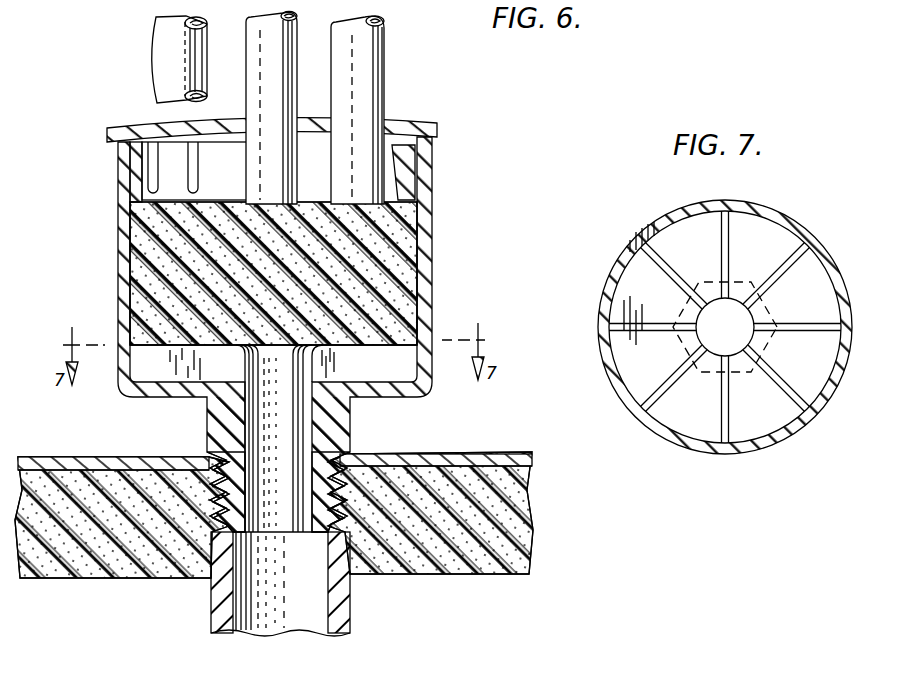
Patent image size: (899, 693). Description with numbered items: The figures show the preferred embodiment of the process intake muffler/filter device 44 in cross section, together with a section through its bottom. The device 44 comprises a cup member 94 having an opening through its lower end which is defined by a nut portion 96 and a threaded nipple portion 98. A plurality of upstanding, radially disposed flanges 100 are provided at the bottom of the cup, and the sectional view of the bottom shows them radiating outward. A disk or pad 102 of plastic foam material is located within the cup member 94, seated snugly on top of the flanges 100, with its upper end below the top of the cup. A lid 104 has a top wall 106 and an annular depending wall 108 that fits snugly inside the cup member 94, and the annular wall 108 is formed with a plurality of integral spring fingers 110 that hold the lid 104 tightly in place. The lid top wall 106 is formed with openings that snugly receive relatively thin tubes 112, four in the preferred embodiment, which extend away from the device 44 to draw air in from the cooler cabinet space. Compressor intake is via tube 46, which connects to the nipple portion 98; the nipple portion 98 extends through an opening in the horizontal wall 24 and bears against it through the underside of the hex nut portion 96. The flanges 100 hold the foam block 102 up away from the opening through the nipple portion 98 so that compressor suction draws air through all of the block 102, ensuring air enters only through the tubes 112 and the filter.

In FIG. 6, the horizontal wall 24 is at (87, 462).
In FIG. 6, the device 44 is at (250, 308).
In FIG. 6, the tube 46 is at (220, 617).
In FIG. 6, the cup member 94 is at (118, 260).
In FIG. 6, the nut portion 96 is at (207, 428).
In FIG. 6, the threaded nipple portion 98 is at (332, 492).
In FIG. 6, the flanges 100 is at (385, 365).
In FIG. 7, the flanges 100 is at (642, 272).
In FIG. 6, the disk or pad 102 is at (397, 262).
In FIG. 6, the lid 104 is at (398, 107).
In FIG. 6, the top wall 106 is at (233, 124).
In FIG. 6, the annular depending wall 108 is at (137, 170).
In FIG. 6, the spring fingers 110 is at (172, 158).
In FIG. 6, the tubes 112 is at (153, 52).